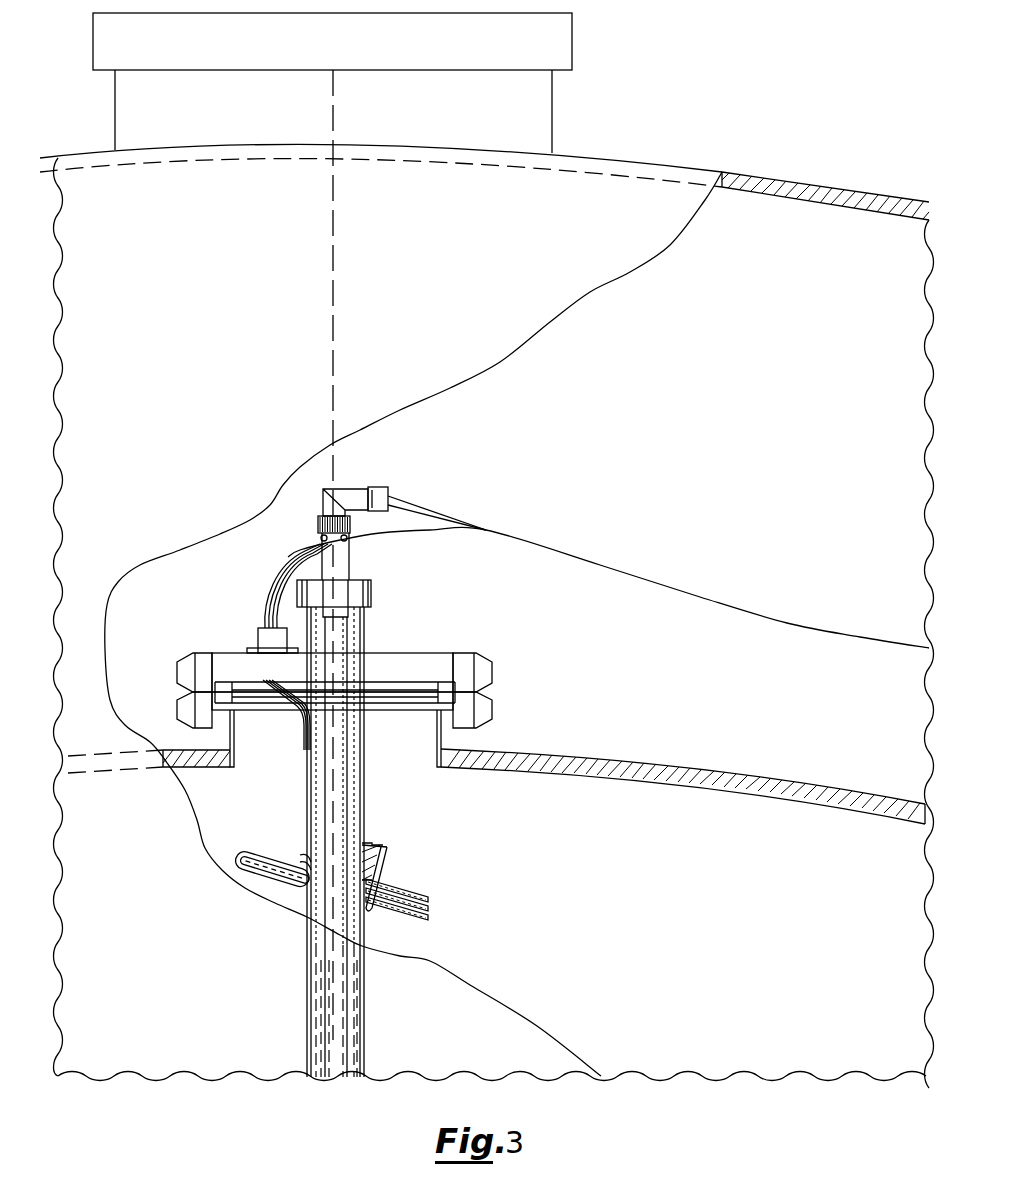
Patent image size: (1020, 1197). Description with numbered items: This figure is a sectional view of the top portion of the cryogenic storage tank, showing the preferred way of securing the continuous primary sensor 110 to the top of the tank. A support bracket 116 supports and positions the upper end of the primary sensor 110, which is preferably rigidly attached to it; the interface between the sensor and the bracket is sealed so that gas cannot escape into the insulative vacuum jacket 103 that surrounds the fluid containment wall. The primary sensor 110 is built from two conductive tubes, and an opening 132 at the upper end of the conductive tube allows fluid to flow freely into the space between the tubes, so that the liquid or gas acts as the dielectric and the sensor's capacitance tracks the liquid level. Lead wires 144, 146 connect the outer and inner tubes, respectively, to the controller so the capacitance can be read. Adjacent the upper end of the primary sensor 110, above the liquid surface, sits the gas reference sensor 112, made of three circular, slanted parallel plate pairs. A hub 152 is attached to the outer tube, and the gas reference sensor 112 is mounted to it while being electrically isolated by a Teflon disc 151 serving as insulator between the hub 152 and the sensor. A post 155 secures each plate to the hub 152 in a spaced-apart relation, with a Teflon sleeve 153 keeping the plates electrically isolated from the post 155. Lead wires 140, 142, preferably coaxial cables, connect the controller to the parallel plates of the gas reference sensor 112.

The vacuum jacket 103 is at (219, 304).
The primary sensor 110 is at (378, 1035).
The gas reference sensor 112 is at (233, 850).
The support bracket 116 is at (222, 652).
The opening 132 is at (360, 746).
The lead wire 140 is at (306, 846).
The lead wire 142 is at (290, 870).
The lead wire 144 is at (415, 503).
The lead wire 146 is at (422, 519).
The disc 151 is at (394, 880).
The hub 152 is at (371, 844).
The sleeve 153 is at (370, 908).
The post 155 is at (389, 862).